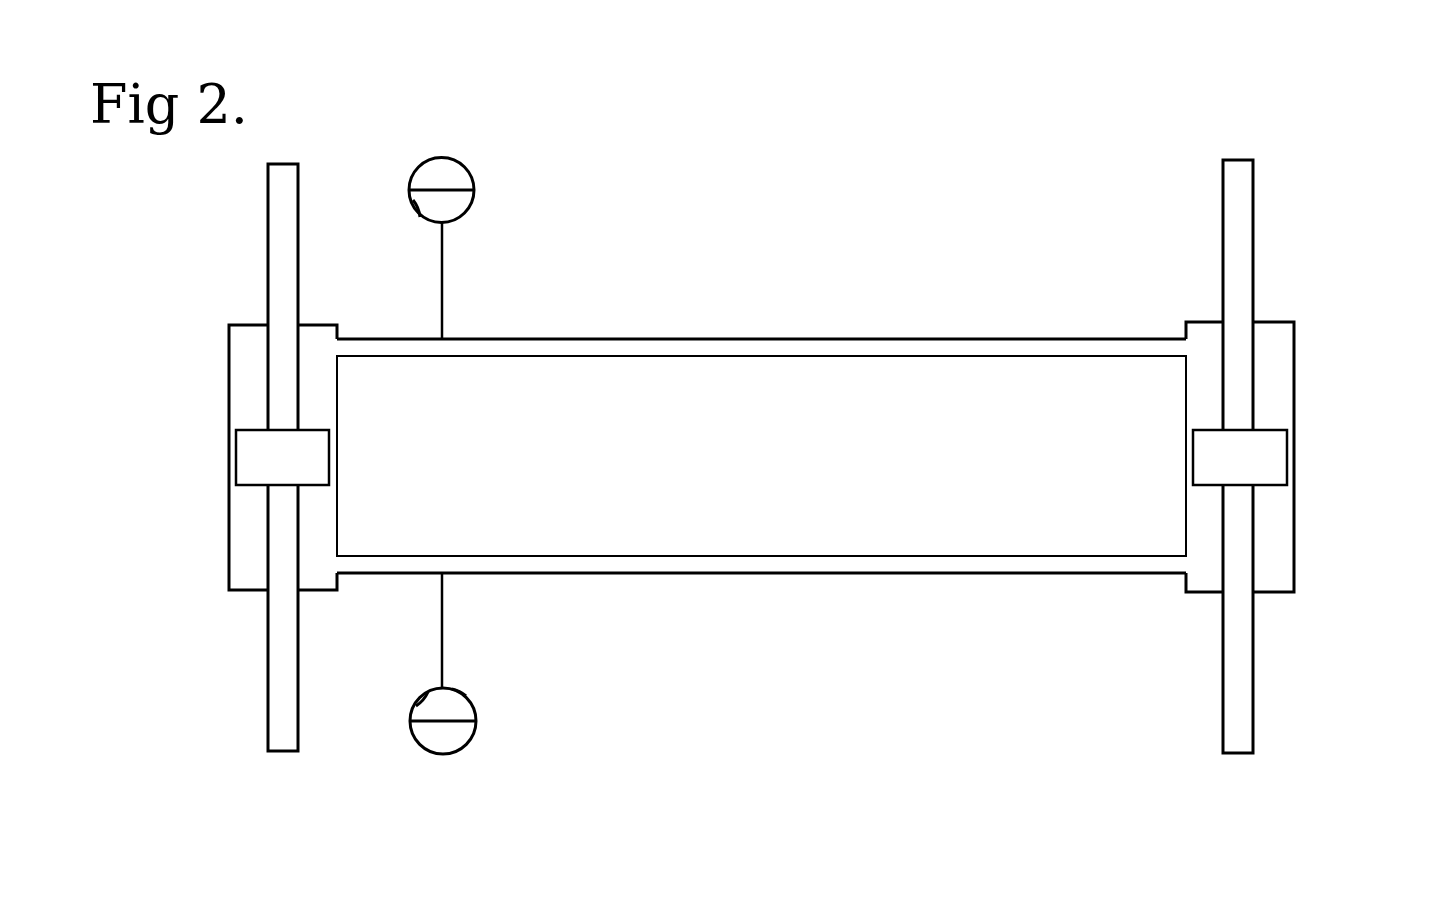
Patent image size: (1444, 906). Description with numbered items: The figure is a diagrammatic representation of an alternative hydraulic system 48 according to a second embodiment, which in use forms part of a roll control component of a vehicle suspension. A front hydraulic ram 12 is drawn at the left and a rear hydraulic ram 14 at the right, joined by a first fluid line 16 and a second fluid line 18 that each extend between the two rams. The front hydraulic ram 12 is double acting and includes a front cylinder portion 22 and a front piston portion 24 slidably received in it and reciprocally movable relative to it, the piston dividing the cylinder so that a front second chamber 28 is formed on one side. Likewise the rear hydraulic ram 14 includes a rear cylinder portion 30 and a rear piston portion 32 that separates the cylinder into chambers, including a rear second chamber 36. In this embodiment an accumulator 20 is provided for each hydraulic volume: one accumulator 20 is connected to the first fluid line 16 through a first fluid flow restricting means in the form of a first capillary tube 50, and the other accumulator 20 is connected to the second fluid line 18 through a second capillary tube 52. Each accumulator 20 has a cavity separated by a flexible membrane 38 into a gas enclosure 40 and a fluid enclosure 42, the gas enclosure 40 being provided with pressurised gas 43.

The front hydraulic ram 12 is at (194, 456).
The rear hydraulic ram 14 is at (1324, 456).
The first fluid line 16 is at (950, 338).
The second fluid line 18 is at (950, 555).
The accumulator 20 is at (499, 210).
The front cylinder portion 22 is at (228, 357).
The front piston portion 24 is at (283, 694).
The front second chamber 28 is at (240, 571).
The rear cylinder portion 30 is at (1296, 348).
The rear piston portion 32 is at (1255, 679).
The rear second chamber 36 is at (1287, 575).
The flexible membrane 38 is at (466, 694).
The gas enclosure 40 is at (470, 172).
The fluid enclosure 42 is at (423, 217).
The pressurised gas 43 is at (430, 177).
The alternative hydraulic system 48 is at (786, 233).
The first capillary tube 50 is at (443, 298).
The second capillary tube 52 is at (443, 619).